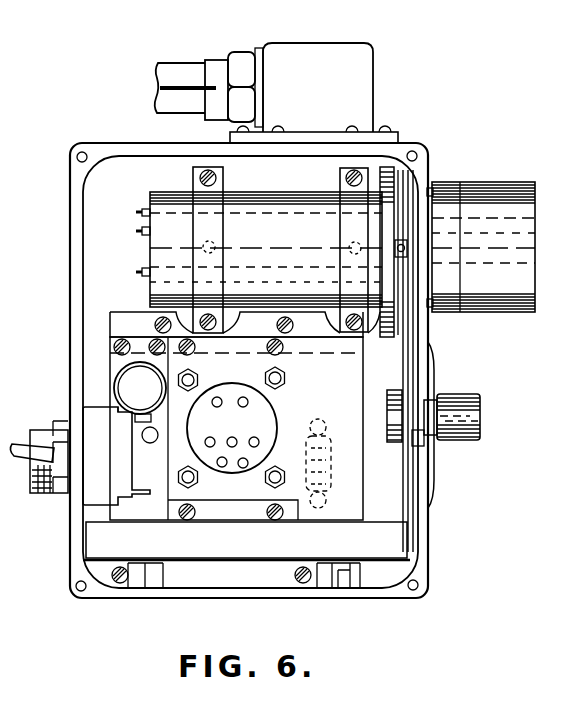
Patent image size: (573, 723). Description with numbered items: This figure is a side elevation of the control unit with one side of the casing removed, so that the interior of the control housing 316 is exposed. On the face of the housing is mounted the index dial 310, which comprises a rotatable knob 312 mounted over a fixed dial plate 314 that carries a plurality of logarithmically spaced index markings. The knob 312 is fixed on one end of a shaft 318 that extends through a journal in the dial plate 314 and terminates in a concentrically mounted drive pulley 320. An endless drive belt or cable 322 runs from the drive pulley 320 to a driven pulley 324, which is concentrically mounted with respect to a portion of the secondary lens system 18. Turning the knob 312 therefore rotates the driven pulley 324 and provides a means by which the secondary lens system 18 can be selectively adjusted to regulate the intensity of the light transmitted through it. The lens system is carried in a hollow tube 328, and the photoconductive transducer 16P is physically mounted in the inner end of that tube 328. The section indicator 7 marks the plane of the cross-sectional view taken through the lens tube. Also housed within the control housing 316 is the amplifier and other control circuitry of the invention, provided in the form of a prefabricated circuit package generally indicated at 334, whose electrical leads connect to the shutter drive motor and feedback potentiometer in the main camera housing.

The control housing 316 is at (65, 187).
The photoconductive transducer 16P is at (129, 215).
The section line for FIG. 7 is at (150, 247).
The hollow tube 328 is at (248, 197).
The secondary lens system 18 is at (540, 190).
The driven pulley 324 is at (402, 316).
The endless drive belt or cable 322 is at (404, 360).
The drive pulley 320 is at (388, 393).
The shaft 318 is at (417, 446).
The index dial 310 is at (455, 390).
The rotatable knob 312 is at (468, 438).
The fixed dial plate 314 is at (429, 493).
The prefabricated circuit package 334 is at (247, 427).